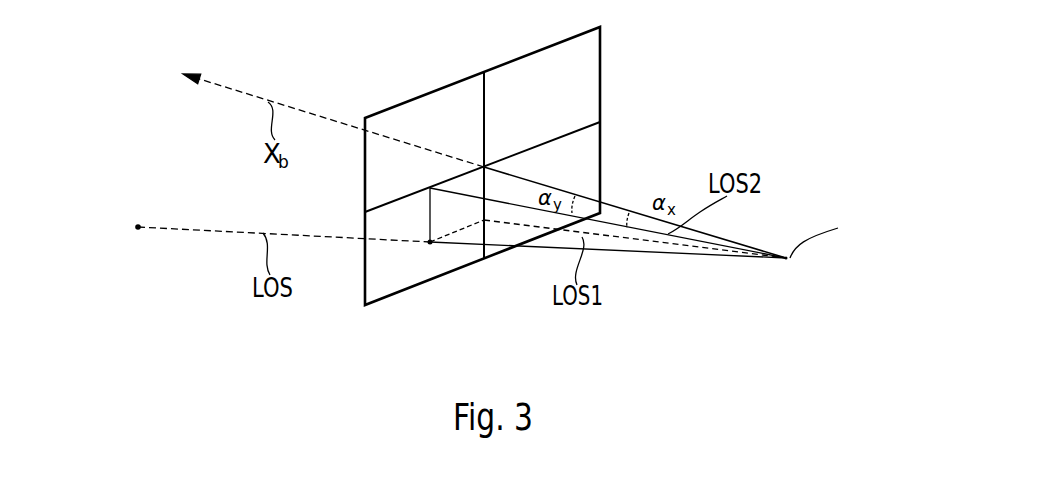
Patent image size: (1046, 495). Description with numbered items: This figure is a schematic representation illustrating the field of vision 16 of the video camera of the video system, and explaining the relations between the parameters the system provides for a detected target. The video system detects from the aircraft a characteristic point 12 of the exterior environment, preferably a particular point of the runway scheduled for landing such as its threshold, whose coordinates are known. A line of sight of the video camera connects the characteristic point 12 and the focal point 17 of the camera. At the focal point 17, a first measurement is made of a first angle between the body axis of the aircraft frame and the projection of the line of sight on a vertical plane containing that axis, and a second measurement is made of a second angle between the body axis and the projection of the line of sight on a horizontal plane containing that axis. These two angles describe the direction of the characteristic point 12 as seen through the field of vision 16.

The characteristic point 12 is at (138, 229).
The field of vision 16 is at (600, 62).
The focal point 17 is at (790, 259).